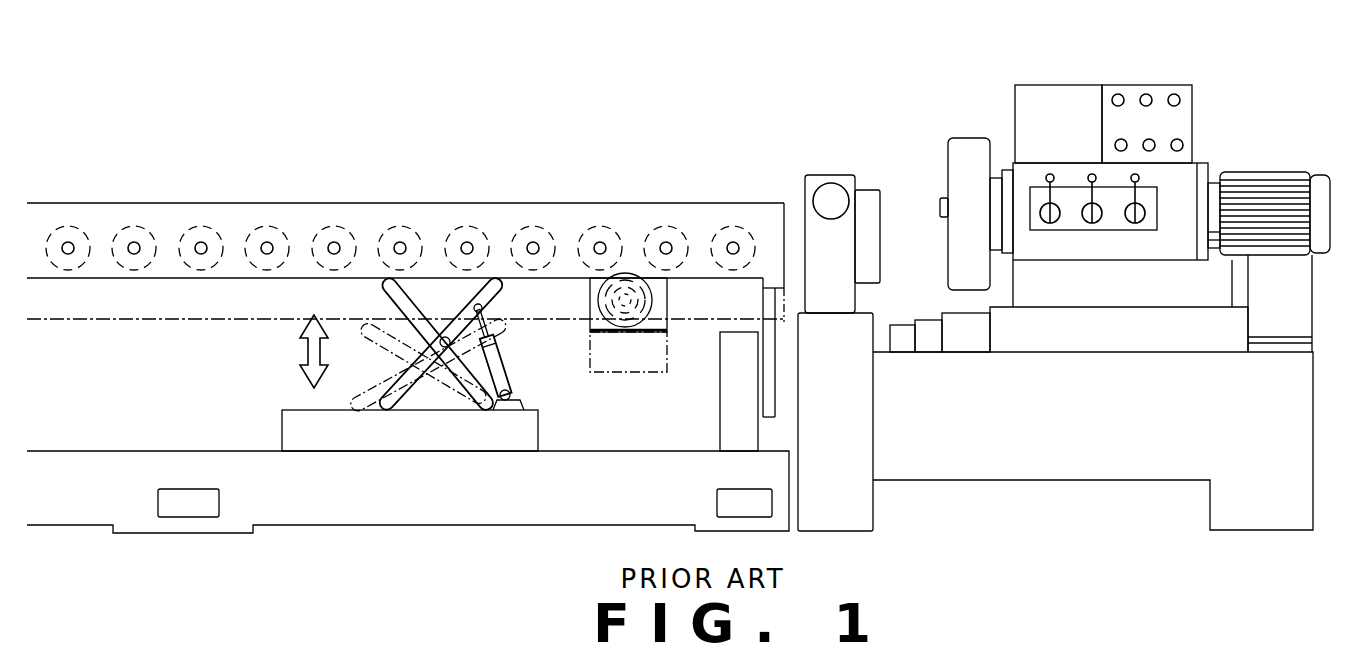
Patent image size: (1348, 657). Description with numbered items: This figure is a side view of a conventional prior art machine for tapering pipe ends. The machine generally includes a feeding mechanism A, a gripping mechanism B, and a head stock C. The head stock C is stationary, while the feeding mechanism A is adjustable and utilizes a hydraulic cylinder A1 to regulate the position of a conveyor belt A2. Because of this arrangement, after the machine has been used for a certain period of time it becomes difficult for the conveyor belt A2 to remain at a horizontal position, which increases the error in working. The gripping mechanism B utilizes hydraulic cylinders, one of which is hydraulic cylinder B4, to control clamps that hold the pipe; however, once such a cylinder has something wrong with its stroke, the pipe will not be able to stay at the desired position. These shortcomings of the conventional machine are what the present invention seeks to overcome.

The feeding mechanism A is at (395, 199).
The hydraulic cylinder A1 is at (515, 371).
The conveyor belt A2 is at (532, 203).
The gripping mechanism B is at (824, 162).
The hydraulic cylinder B4 is at (836, 186).
The head stock C is at (1078, 82).